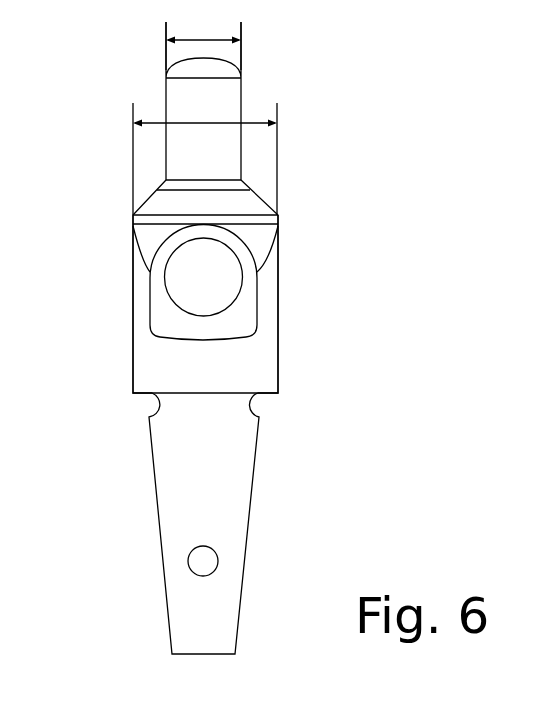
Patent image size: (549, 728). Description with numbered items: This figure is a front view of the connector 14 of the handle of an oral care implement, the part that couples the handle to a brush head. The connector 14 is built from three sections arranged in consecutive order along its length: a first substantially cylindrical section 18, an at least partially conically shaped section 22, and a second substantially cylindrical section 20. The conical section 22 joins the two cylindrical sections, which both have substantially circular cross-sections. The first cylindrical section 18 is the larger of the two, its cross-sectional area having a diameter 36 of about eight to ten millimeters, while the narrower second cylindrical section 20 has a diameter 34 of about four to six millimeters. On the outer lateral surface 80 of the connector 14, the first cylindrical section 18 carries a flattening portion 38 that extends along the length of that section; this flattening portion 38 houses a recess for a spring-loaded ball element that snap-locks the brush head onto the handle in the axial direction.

The connector 14 is at (297, 200).
The second substantially cylindrical section 20 is at (225, 103).
The at least partially conically shaped section 22 is at (158, 202).
The first substantially cylindrical section 18 is at (267, 317).
The flattening portion 38 is at (250, 290).
The outer lateral surface 80 is at (124, 331).
The diameter 34 is at (198, 40).
The diameter 36 is at (155, 121).